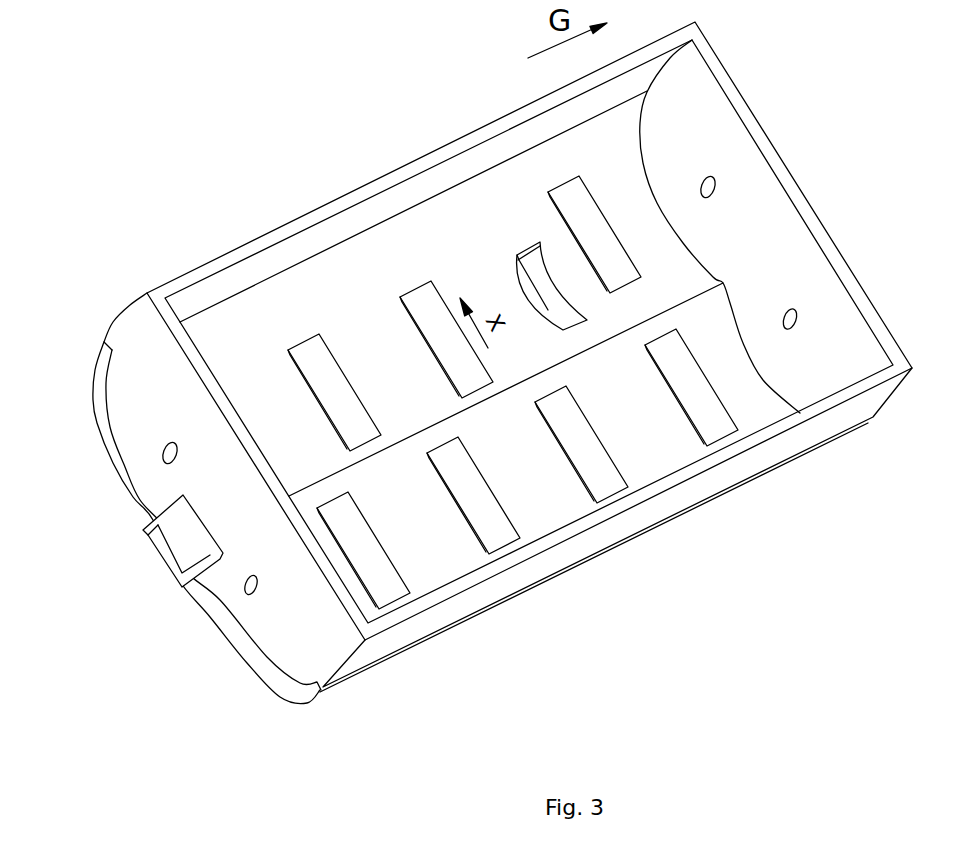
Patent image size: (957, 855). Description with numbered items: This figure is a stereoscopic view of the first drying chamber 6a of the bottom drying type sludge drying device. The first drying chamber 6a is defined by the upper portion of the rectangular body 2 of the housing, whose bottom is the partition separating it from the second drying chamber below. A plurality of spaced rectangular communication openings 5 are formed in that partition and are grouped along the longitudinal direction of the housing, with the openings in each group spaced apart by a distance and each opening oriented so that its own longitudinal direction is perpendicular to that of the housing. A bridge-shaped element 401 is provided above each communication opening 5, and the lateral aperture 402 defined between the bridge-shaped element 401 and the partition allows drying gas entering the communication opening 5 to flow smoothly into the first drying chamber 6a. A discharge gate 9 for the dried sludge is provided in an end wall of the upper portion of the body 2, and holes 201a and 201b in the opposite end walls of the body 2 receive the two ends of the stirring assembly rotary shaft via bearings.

The body 2 is at (465, 608).
The communication opening 5 is at (523, 258).
The first drying chamber 6a is at (368, 255).
The discharge gate 9 is at (175, 565).
The hole 201a is at (258, 587).
The hole 201b is at (170, 440).
The bridge-shaped element 401 is at (717, 423).
The lateral aperture 402 is at (555, 230).